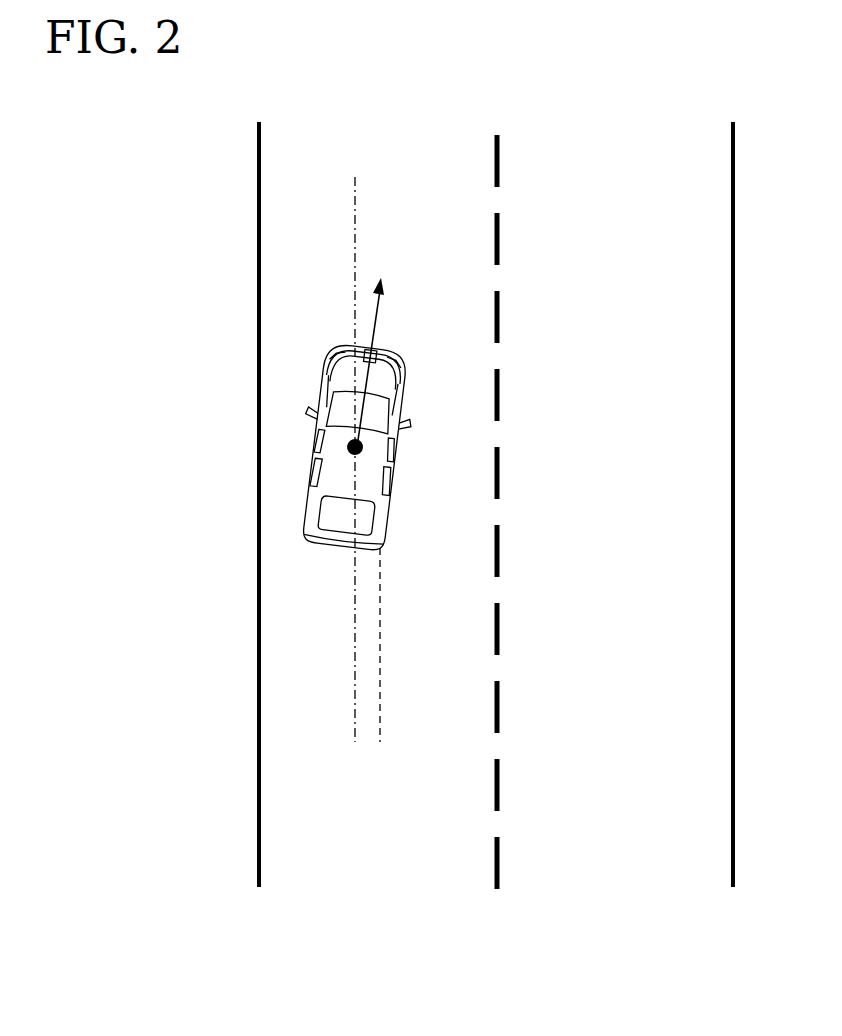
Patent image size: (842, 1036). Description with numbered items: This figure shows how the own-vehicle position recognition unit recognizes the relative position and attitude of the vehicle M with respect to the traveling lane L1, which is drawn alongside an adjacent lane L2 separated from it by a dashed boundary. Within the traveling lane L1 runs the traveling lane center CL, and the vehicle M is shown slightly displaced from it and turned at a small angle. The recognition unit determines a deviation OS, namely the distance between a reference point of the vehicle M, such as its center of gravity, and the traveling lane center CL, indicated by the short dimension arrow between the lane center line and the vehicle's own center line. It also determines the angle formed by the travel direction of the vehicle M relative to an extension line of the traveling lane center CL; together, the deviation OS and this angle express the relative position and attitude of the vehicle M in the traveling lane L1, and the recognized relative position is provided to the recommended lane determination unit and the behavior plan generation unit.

The vehicle M is at (313, 463).
The deviation OS is at (408, 729).
The traveling lane center CL is at (380, 628).
The traveling lane L1 is at (374, 862).
The second lane (adjacent lane) L2 is at (618, 862).